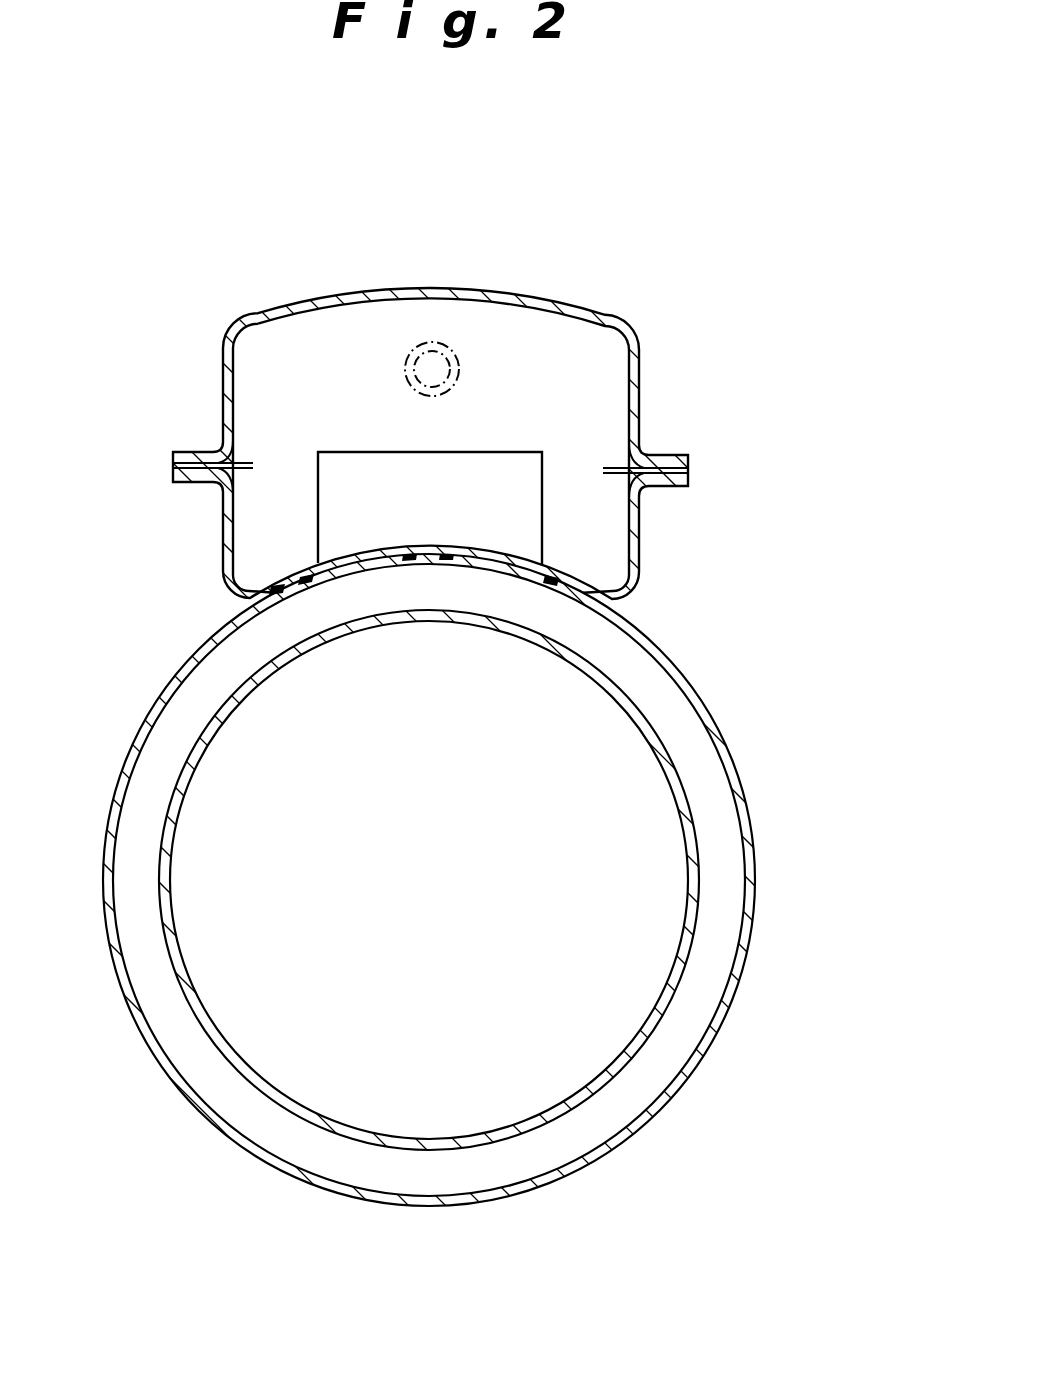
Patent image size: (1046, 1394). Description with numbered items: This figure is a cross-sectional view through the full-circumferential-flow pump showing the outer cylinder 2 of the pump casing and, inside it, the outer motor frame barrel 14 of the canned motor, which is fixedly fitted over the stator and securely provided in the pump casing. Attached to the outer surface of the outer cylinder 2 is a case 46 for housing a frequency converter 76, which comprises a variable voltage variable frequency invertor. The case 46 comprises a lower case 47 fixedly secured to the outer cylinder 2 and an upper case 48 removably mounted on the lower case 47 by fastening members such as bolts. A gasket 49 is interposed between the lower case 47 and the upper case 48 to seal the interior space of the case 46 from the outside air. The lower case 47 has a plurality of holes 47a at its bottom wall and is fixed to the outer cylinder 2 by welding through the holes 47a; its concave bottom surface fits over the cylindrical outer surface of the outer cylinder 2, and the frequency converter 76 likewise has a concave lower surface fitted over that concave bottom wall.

The outer cylinder 2 is at (722, 738).
The outer motor frame barrel 14 is at (690, 823).
The case 46 is at (512, 370).
The lower case 47 is at (238, 515).
The upper case 48 is at (307, 293).
The gasket 49 is at (194, 452).
The holes 47a is at (440, 549).
The frequency converter 76 is at (455, 467).